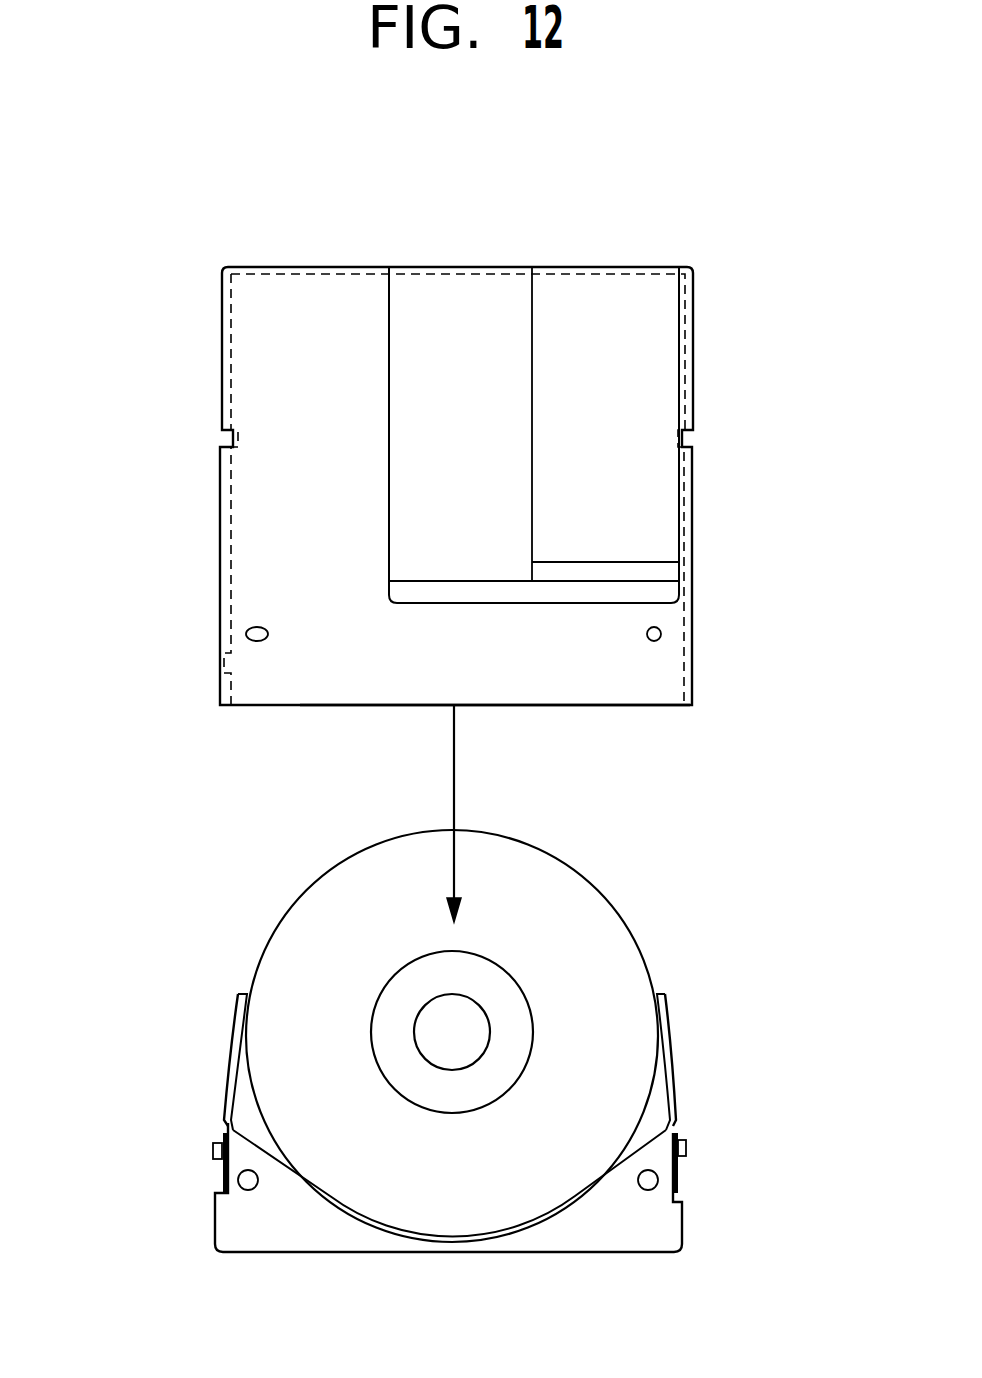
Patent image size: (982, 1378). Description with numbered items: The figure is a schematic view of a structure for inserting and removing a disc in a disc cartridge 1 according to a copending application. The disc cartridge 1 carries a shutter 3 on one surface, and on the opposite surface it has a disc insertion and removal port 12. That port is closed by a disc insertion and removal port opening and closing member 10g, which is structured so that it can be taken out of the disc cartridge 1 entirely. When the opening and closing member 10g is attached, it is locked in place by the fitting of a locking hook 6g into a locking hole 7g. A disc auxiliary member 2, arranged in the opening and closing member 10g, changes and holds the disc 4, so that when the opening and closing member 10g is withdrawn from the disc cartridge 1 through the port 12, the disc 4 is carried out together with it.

The disc cartridge 1 is at (262, 345).
The disc auxiliary member 2 is at (227, 1033).
The shutter 3 is at (461, 306).
The disc 4 is at (580, 928).
The locking hook 6g is at (214, 1148).
The locking hole 7g is at (222, 664).
The disc insertion and removal port opening and closing member 10g is at (647, 1233).
The disc insertion and removal port 12 is at (597, 705).